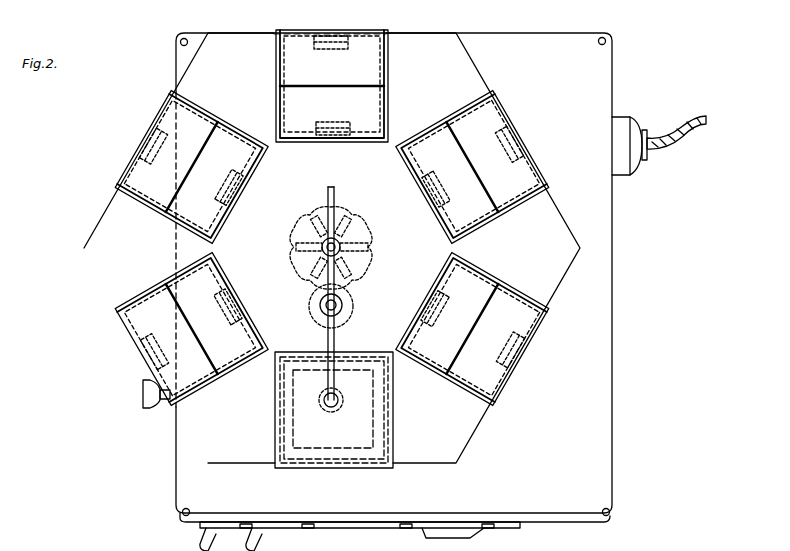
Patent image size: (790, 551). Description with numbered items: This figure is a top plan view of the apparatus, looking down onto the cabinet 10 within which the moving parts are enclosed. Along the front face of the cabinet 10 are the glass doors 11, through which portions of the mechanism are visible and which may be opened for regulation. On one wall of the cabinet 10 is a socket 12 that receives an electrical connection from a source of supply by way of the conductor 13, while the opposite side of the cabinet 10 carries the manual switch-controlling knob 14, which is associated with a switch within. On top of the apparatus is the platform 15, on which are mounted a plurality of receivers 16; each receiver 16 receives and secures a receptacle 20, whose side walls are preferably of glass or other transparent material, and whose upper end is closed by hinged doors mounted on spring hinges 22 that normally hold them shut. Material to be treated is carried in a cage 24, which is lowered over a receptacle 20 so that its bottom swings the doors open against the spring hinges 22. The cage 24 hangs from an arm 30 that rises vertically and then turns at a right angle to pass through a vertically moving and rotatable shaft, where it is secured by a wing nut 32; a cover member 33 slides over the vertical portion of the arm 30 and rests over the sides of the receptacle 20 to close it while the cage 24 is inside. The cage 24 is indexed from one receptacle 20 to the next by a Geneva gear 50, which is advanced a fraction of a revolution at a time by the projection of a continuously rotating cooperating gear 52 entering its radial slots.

The cabinet 10 is at (607, 459).
The glass doors 11 is at (428, 537).
The socket 12 is at (620, 130).
The conductor 13 is at (688, 126).
The manual switch-controlling knob 14 is at (142, 399).
The platform 15 is at (465, 420).
The receivers 16 is at (233, 131).
The receptacles 20 is at (300, 144).
The spring hinges 22 is at (345, 144).
The cage 24 is at (395, 428).
The arm 30 is at (340, 395).
The wing nut 32 is at (322, 245).
The cover member 33 is at (302, 397).
The Geneva gear 50 is at (355, 228).
The cooperating gear 52 is at (352, 302).